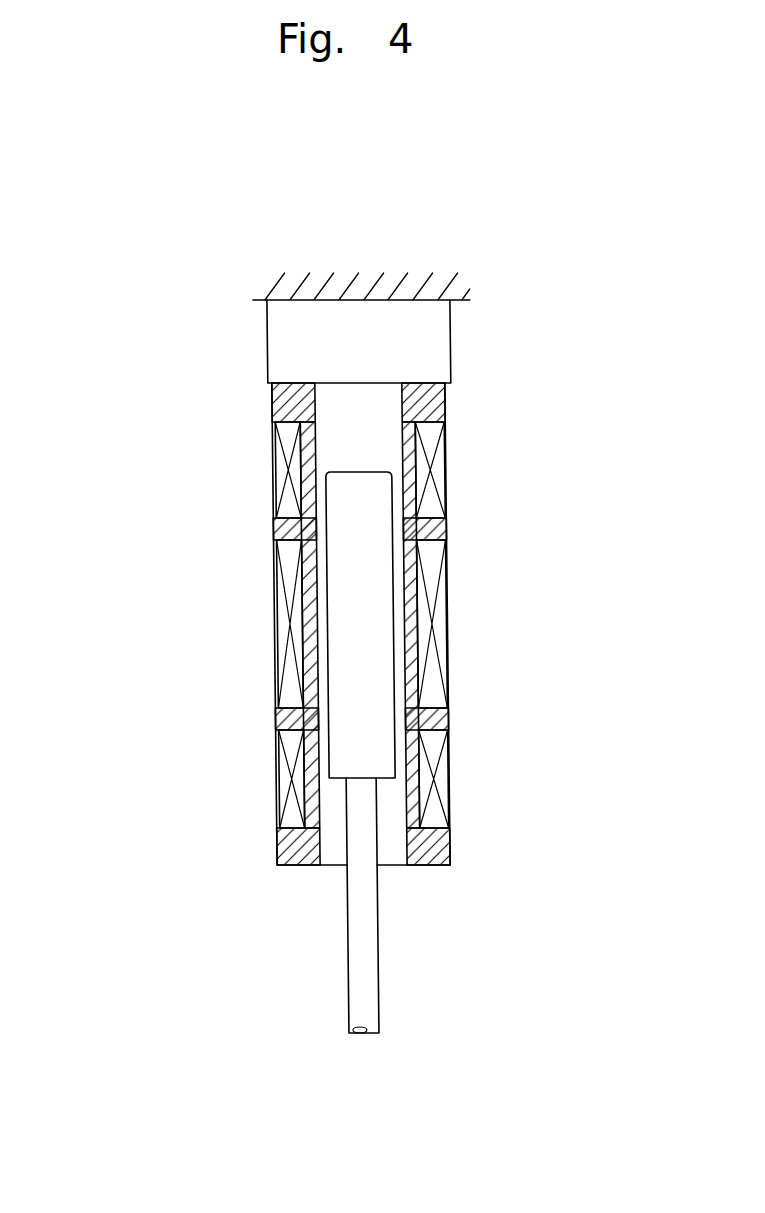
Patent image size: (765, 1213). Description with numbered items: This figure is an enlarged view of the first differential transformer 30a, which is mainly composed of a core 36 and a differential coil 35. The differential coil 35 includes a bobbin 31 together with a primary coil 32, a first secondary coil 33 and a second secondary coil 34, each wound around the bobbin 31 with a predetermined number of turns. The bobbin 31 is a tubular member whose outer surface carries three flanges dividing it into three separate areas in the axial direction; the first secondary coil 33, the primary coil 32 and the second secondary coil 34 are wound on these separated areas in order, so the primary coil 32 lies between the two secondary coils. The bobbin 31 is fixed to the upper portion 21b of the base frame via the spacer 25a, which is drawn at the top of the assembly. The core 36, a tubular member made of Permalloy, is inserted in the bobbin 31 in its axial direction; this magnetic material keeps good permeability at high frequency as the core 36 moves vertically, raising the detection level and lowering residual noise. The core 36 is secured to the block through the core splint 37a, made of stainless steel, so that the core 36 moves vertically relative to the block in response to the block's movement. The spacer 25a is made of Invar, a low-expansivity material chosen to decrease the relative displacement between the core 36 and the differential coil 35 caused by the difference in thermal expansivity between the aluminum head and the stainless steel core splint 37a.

The upper portion 21b is at (435, 288).
The spacer 25a is at (430, 335).
The first differential transformer 30a is at (189, 344).
The bobbin 31 is at (423, 402).
The primary coil 32 is at (280, 628).
The first secondary coil 33 is at (277, 480).
The second secondary coil 34 is at (280, 780).
The differential coil 35 is at (148, 465).
The core 36 is at (375, 673).
The core splint 37a is at (370, 968).